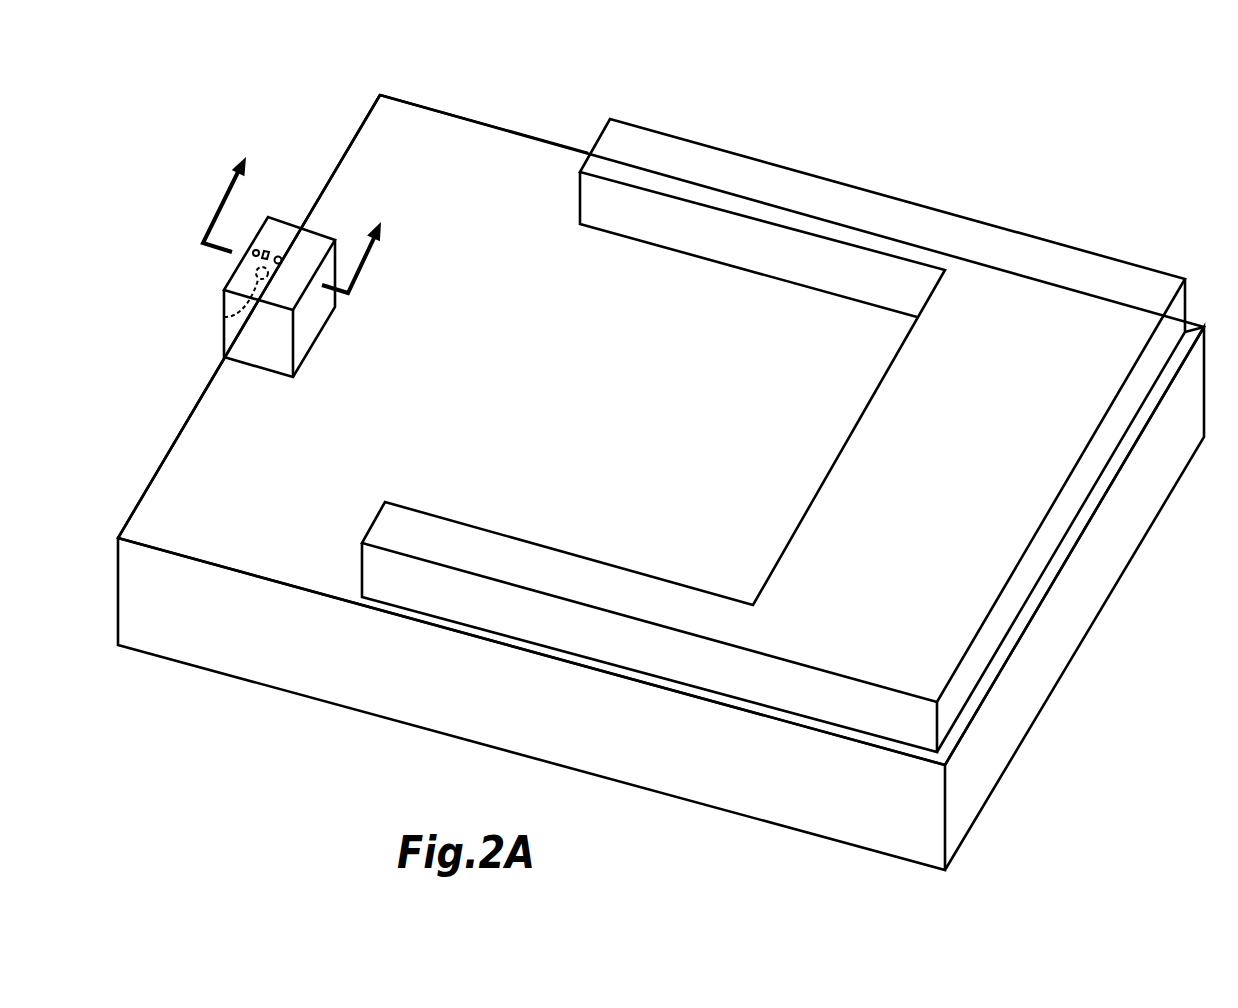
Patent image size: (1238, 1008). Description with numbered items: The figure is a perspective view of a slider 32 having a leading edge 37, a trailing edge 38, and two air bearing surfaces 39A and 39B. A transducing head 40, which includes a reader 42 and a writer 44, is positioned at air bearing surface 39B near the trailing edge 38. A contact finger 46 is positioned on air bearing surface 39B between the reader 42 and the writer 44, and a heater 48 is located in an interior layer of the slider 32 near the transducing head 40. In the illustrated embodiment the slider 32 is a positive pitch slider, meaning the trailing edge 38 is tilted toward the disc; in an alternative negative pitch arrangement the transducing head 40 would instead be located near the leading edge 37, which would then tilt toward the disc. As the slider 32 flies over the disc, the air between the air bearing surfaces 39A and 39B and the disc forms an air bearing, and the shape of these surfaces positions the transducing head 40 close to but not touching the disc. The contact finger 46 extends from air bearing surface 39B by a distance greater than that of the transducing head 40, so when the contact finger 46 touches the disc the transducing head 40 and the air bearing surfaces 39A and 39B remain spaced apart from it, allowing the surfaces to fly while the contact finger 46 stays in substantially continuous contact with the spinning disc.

The slider 32 is at (828, 140).
The leading edge 37 is at (965, 787).
The trailing edge 38 is at (158, 468).
The air bearing surface 39A is at (1023, 280).
The air bearing surface 39B is at (292, 292).
The transducing head 40 is at (238, 264).
The reader 42 is at (280, 256).
The writer 44 is at (255, 249).
The contact finger 46 is at (267, 250).
The heater 48 is at (224, 317).